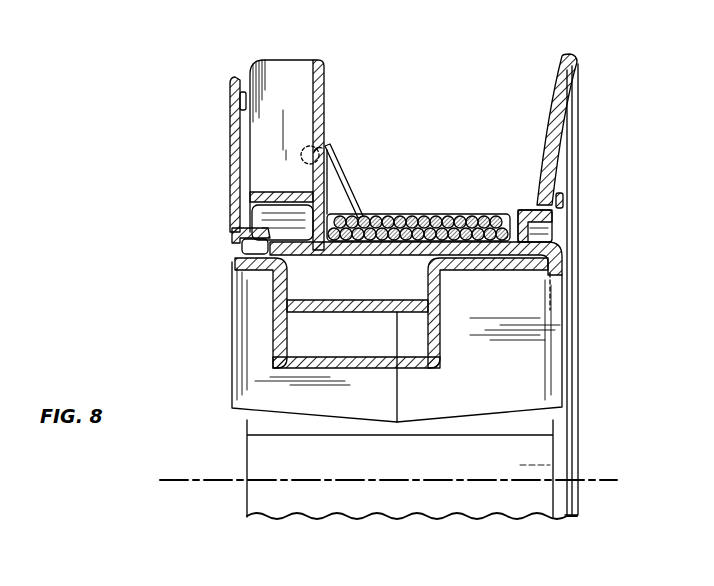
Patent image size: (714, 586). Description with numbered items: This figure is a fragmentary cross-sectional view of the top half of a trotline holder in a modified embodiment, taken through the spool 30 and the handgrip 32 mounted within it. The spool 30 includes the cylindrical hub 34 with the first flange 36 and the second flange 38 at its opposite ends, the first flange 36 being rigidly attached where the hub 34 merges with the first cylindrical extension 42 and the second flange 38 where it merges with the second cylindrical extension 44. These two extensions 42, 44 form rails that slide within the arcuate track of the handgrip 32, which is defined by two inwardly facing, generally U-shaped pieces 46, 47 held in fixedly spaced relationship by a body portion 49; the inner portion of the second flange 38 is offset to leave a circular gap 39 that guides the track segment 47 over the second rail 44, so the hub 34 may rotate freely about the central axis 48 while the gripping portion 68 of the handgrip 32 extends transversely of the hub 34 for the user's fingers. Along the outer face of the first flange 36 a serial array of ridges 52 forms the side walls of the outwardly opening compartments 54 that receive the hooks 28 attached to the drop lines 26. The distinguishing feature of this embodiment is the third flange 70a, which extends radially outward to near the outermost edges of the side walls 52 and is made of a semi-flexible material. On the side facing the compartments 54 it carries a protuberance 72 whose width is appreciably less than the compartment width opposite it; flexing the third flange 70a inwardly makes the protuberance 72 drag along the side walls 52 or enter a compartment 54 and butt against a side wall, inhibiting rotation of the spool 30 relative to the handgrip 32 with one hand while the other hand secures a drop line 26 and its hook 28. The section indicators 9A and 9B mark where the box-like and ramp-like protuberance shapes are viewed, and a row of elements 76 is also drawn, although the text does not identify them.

The drop line 26 is at (352, 202).
The hook 28 is at (345, 156).
The spool 30 is at (432, 135).
The handgrip 32 is at (220, 328).
The hub 34 is at (357, 452).
The first flange 36 is at (328, 82).
The second flange 38 is at (584, 98).
The circular gap 39 is at (552, 220).
The first cylindrical extension 42 is at (300, 248).
The second cylindrical extension 44 is at (548, 230).
The inwardly facing piece 46 is at (233, 250).
The inwardly facing piece 47 is at (563, 258).
The central axis 48 is at (597, 478).
The body portion 49 is at (523, 356).
The ridges 52 is at (293, 78).
The compartments 54 is at (277, 85).
The gripping portion 68 is at (443, 348).
The third flange 70a is at (230, 150).
The protuberance 72 is at (243, 78).
The balls 76 is at (478, 217).
The section line 9A is at (220, 110).
The section line 9B is at (220, 95).